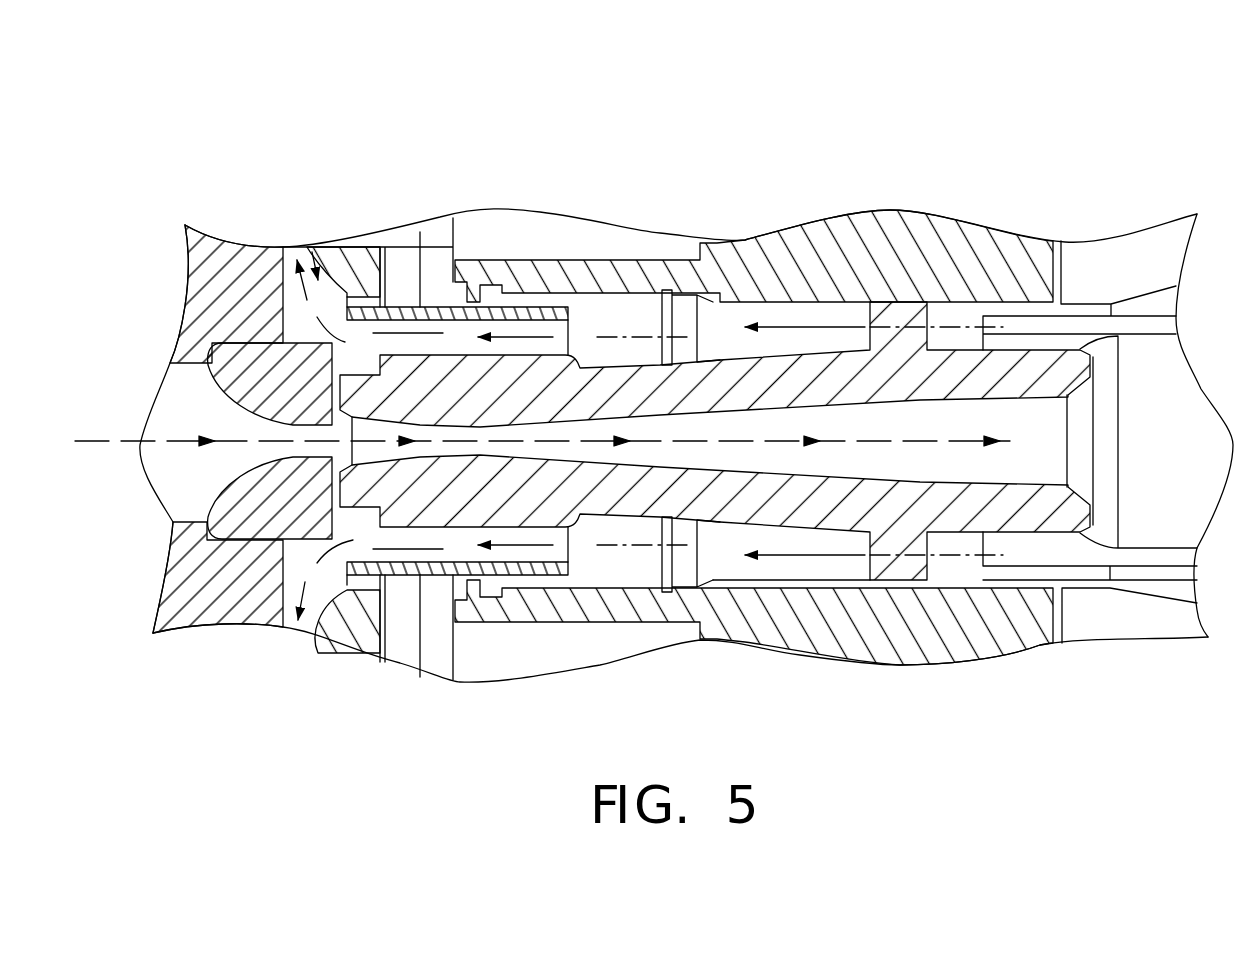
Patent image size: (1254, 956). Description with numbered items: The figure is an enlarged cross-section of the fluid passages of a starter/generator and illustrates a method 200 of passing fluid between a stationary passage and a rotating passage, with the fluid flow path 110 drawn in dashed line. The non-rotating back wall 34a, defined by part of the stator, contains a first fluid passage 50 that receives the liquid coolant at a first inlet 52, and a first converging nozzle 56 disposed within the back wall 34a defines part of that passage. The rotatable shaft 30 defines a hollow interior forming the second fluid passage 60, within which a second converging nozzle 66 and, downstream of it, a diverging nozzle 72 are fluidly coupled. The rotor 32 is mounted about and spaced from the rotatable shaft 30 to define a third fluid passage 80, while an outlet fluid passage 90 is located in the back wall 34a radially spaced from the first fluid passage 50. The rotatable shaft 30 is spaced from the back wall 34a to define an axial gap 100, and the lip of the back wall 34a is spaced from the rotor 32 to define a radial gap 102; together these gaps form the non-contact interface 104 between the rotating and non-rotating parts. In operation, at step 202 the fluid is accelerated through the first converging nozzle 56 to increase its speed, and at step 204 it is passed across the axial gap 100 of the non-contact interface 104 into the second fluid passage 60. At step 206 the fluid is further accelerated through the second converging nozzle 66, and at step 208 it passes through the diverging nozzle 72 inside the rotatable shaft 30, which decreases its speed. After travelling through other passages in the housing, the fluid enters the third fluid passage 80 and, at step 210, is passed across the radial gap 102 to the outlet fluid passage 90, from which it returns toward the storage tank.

The method of passing fluid 200 is at (156, 76).
The rotatable shaft 30 is at (1056, 352).
The rotor 32 is at (500, 297).
The back wall 34a is at (215, 292).
The first fluid passage 50 is at (185, 571).
The first inlet 52 is at (160, 411).
The first converging nozzle 56 is at (225, 487).
The second fluid passage 60 is at (723, 457).
The second converging nozzle 66 is at (395, 436).
The diverging nozzle 72 is at (745, 435).
The third fluid passage 80 is at (522, 556).
The outlet fluid passage 90 is at (322, 603).
The axial gap 100 is at (338, 548).
The radial gap 102 is at (340, 250).
The non-contact interface 104 is at (348, 542).
The fluid flow path 110 is at (972, 248).
The accelerating step 202 is at (250, 412).
The gap-passing step 204 is at (347, 395).
The second accelerating step 206 is at (462, 562).
The diverging nozzle step 208 is at (822, 412).
The radial gap passing step 210 is at (318, 247).